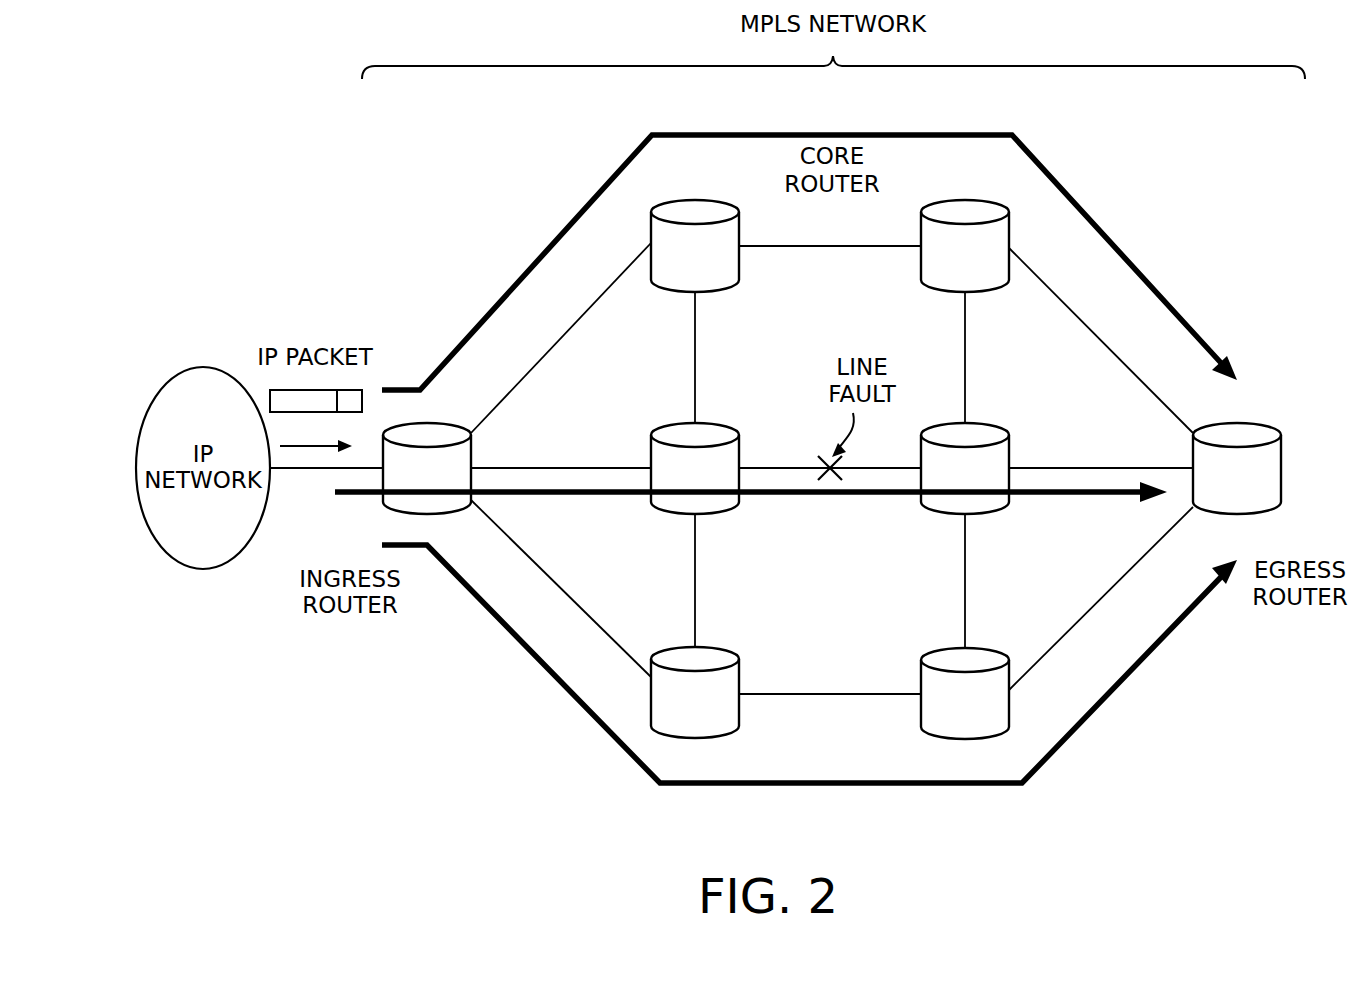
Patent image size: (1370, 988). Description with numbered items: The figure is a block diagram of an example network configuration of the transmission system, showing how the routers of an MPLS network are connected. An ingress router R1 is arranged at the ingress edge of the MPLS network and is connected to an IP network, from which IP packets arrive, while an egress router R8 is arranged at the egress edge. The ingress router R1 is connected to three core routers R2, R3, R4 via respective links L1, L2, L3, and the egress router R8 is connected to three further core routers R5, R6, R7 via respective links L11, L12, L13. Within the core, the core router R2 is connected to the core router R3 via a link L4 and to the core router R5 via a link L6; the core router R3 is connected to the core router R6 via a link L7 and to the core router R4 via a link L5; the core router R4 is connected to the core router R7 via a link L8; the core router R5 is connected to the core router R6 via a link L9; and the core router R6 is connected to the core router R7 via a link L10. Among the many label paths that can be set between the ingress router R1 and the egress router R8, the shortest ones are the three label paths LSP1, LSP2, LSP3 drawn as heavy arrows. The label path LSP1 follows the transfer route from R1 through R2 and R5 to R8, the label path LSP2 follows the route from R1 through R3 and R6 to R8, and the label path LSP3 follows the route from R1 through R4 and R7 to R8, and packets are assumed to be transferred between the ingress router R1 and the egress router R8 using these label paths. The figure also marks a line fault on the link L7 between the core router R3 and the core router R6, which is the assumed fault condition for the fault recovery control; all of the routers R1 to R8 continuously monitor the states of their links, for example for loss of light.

The ingress router R1 is at (383, 503).
The core router R2 is at (703, 198).
The core router R3 is at (715, 510).
The core router R4 is at (740, 715).
The core router R5 is at (970, 200).
The core router R6 is at (987, 425).
The core router R7 is at (975, 648).
The egress router R8 is at (1240, 513).
The link L1 is at (595, 302).
The link L2 is at (607, 467).
The link L3 is at (577, 608).
The link L4 is at (695, 350).
The link L5 is at (695, 594).
The link L6 is at (838, 250).
The link L7 is at (777, 467).
The link L8 is at (783, 693).
The link L9 is at (965, 350).
The link L10 is at (963, 567).
The link L11 is at (1047, 277).
The link L12 is at (1103, 467).
The link L13 is at (1125, 572).
The label path LSP1 is at (507, 292).
The label path LSP2 is at (542, 495).
The label path LSP3 is at (603, 732).